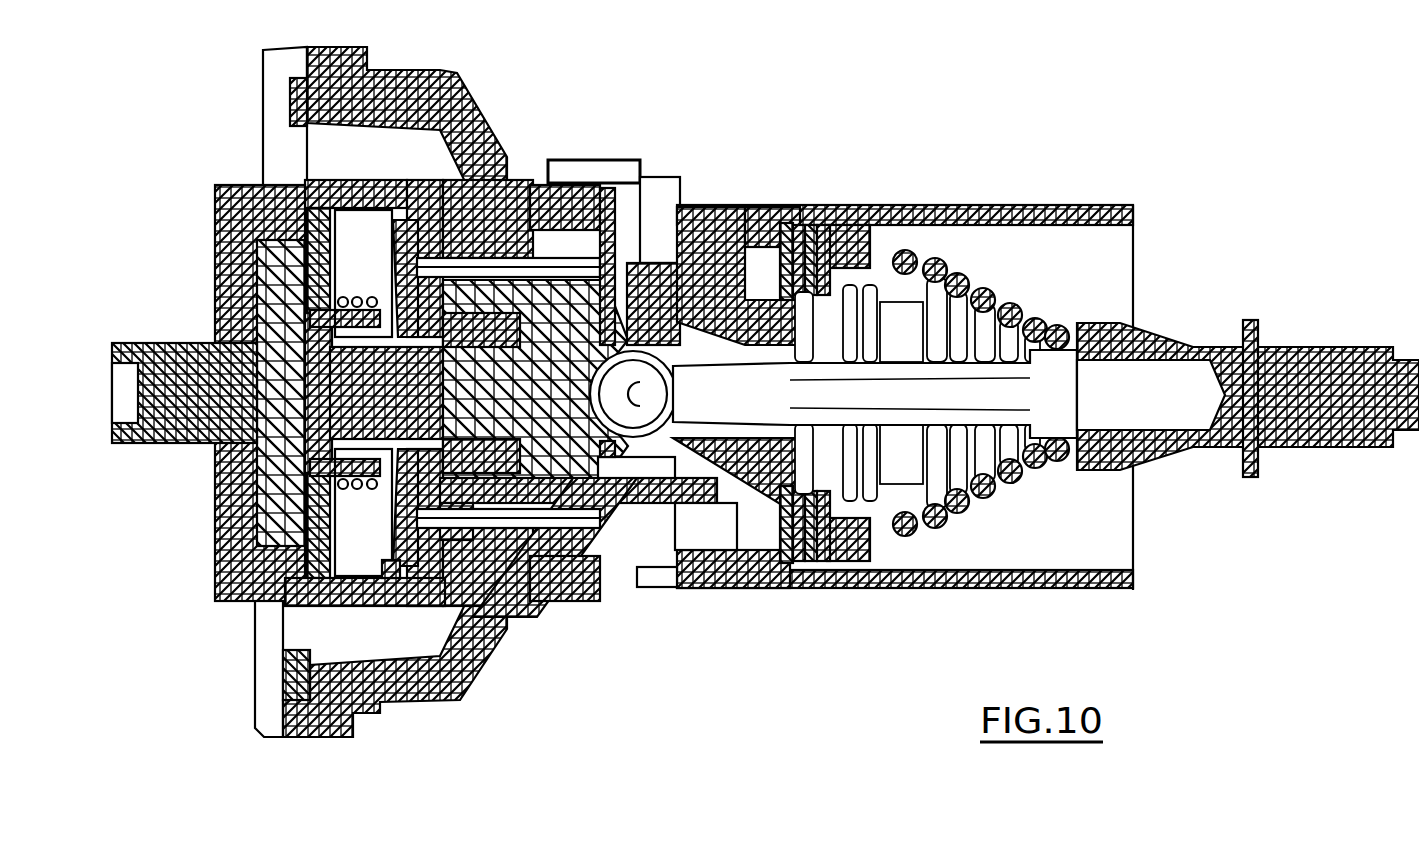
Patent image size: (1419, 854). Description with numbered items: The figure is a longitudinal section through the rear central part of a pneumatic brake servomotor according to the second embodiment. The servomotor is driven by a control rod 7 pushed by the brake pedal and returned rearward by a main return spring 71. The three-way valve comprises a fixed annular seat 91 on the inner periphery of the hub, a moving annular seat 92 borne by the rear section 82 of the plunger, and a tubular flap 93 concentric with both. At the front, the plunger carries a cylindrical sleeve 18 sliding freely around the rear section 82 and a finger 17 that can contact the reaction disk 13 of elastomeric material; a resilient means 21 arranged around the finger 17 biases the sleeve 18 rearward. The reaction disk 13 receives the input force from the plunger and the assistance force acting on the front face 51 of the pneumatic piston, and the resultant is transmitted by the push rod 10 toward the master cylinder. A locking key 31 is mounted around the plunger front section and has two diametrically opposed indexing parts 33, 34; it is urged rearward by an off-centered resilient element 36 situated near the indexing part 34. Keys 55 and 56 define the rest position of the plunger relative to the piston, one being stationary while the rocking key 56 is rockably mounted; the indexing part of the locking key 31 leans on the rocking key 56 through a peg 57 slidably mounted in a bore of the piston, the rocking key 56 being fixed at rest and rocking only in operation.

The control rod 7 is at (1335, 365).
The push rod 10 is at (160, 440).
The reaction disk 13 is at (283, 270).
The finger 17 is at (213, 455).
The cylindrical sleeve 18 is at (487, 462).
The resilient means 21 is at (300, 345).
The locking key 31 is at (392, 603).
The indexing part 33 is at (405, 227).
The indexing part 34 is at (215, 580).
The resilient element 36 is at (213, 200).
The front face 51 is at (215, 545).
The key 55 is at (658, 265).
The rocking key 56 is at (607, 330).
The peg 57 is at (490, 260).
The main return spring 71 is at (1020, 300).
The rear section 82 is at (782, 290).
The fixed annular seat 91 is at (760, 585).
The moving annular seat 92 is at (713, 585).
The tubular flap 93 is at (803, 587).